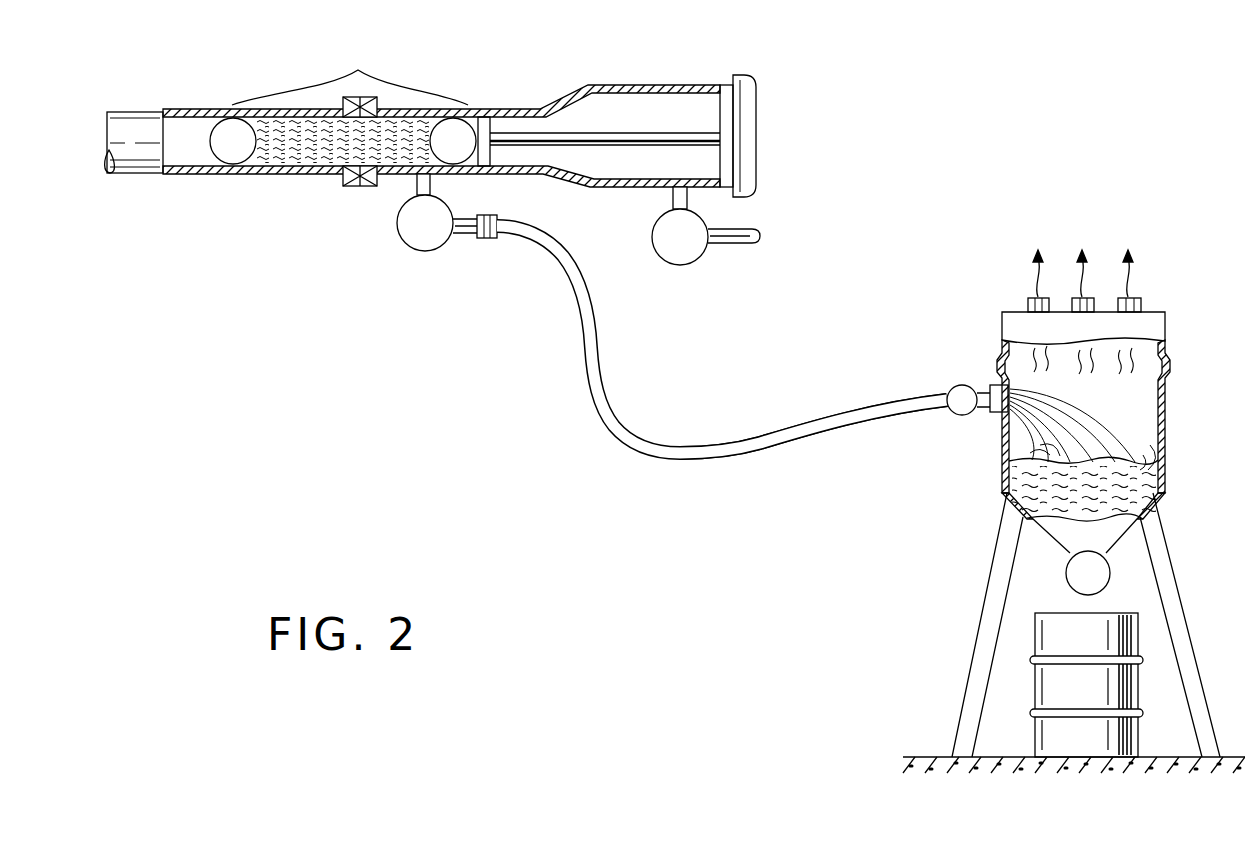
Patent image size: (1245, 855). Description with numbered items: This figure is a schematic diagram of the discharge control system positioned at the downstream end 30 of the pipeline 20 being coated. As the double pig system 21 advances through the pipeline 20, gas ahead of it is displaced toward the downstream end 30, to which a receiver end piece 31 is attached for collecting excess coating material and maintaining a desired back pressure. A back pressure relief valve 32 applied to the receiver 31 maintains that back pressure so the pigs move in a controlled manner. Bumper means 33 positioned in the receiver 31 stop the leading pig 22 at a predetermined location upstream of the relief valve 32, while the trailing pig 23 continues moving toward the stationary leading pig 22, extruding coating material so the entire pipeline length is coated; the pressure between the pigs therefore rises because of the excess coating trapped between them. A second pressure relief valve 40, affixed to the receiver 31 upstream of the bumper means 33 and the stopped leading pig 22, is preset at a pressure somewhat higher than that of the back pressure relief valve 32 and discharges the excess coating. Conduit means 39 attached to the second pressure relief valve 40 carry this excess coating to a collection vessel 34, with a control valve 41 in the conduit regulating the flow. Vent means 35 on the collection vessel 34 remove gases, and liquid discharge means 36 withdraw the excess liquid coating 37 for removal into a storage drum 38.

The pipeline 20 is at (108, 152).
The double pig system 21 is at (358, 70).
The leading pig 22 is at (463, 128).
The trailing pig 23 is at (222, 137).
The downstream end 30 is at (327, 174).
The receiver end piece 31 is at (607, 85).
The back pressure relief valve 32 is at (436, 248).
The bumper means 33 is at (580, 133).
The collection vessel 34 is at (1000, 452).
The vent means 35 is at (1100, 298).
The liquid discharge means 36 is at (1110, 569).
The excess liquid coating 37 is at (1140, 481).
The storage drum 38 is at (1115, 700).
The conduit means 39 is at (650, 437).
The second pressure relief valve 40 is at (398, 226).
The control valve 41 is at (587, 325).